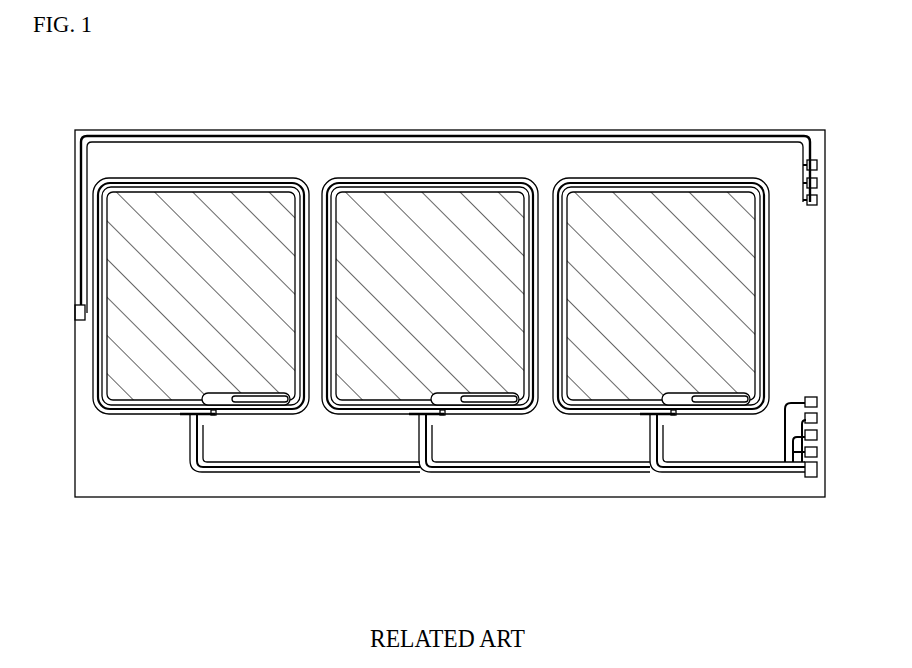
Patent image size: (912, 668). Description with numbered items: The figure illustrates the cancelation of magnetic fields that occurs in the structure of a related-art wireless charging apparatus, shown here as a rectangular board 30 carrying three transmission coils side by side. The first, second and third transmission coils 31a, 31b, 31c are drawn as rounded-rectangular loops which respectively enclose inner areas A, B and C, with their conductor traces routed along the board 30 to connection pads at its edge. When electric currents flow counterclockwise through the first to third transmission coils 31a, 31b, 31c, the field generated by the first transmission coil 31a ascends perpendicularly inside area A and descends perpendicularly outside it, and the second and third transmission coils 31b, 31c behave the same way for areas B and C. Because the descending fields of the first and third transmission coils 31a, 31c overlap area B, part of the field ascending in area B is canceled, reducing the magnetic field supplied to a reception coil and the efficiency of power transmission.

The battery module circuit board / substrate 30 is at (287, 497).
The first transmission coil 31a is at (204, 175).
The second transmission coil 31b is at (433, 175).
The third transmission coil 31c is at (663, 175).